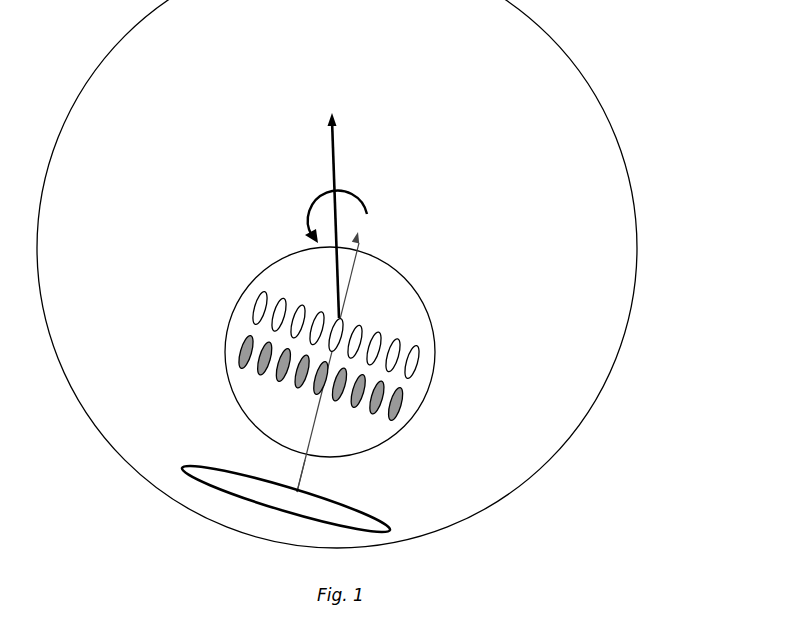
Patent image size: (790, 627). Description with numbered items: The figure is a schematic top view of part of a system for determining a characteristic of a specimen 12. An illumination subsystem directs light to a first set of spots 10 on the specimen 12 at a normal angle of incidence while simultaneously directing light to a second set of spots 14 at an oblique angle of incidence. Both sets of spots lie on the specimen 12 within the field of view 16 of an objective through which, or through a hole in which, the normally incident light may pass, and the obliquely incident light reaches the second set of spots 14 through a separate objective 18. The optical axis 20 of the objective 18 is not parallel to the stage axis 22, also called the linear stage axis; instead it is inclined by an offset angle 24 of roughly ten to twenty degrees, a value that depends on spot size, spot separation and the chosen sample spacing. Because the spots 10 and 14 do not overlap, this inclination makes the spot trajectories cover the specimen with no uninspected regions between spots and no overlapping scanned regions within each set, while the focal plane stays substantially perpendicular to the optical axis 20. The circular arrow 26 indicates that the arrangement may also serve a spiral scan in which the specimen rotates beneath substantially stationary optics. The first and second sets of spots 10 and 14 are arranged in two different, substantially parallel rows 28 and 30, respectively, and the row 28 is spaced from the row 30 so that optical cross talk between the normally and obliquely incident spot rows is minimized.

The first set of spots 10 is at (369, 383).
The specimen 12 is at (638, 253).
The second set of spots 14 is at (375, 414).
The field of view 16 is at (229, 311).
The objective 18 is at (196, 486).
The optical axis 20 is at (300, 470).
The stage axis 22 is at (338, 164).
The offset angle 24 is at (342, 242).
The circular arrow 26 is at (307, 210).
The row 28 is at (424, 363).
The row 30 is at (409, 408).